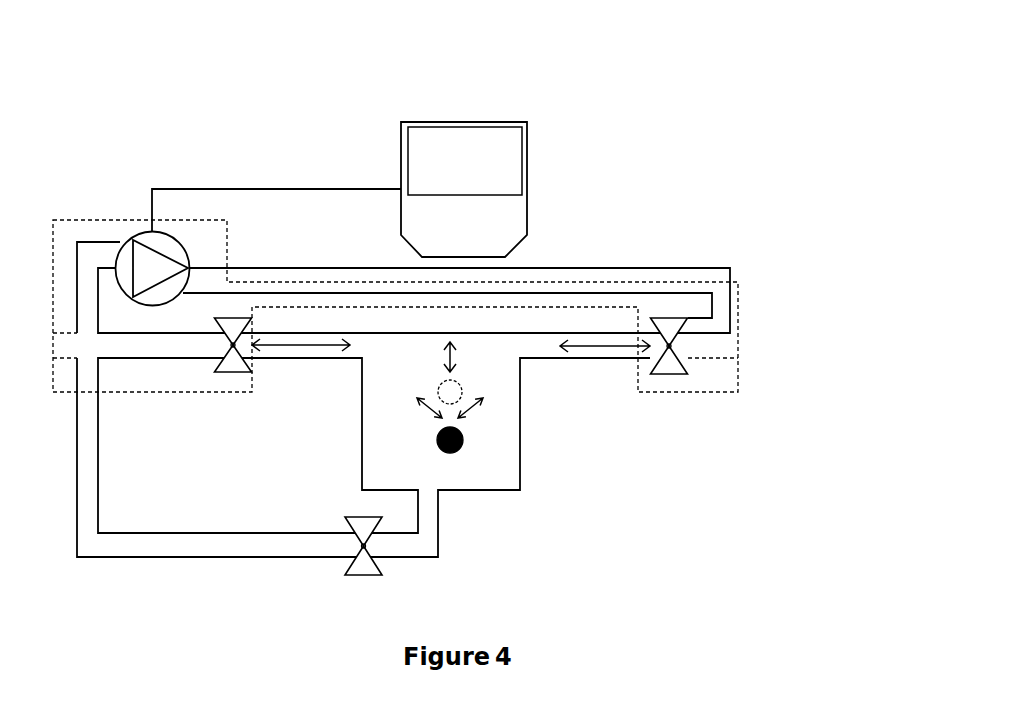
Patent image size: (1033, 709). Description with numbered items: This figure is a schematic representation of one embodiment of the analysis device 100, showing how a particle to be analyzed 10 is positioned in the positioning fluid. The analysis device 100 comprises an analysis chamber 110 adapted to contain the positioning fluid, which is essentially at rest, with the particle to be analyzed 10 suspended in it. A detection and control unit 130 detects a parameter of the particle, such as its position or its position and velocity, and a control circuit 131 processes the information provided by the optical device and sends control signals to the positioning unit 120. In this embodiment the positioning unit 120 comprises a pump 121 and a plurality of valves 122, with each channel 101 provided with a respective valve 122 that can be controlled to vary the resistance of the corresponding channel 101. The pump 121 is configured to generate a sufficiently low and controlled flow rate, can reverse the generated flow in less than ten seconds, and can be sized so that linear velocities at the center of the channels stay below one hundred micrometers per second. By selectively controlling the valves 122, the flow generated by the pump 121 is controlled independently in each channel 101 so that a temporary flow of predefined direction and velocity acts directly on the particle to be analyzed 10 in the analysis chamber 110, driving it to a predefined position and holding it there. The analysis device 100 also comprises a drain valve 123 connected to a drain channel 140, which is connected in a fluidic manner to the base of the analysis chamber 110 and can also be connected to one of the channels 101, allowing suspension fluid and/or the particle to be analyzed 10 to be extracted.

The analysis device 100 is at (721, 76).
The particle to be analyzed 10 is at (465, 436).
The channels 101 is at (317, 368).
The analysis chamber 110 is at (383, 465).
The positioning unit 120 is at (738, 282).
The pump 121 is at (178, 247).
The valves 122 is at (683, 320).
The drain valve 123 is at (363, 567).
The detection and control unit 130 is at (492, 117).
The control circuit 131 is at (522, 183).
The drain channel 140 is at (210, 557).